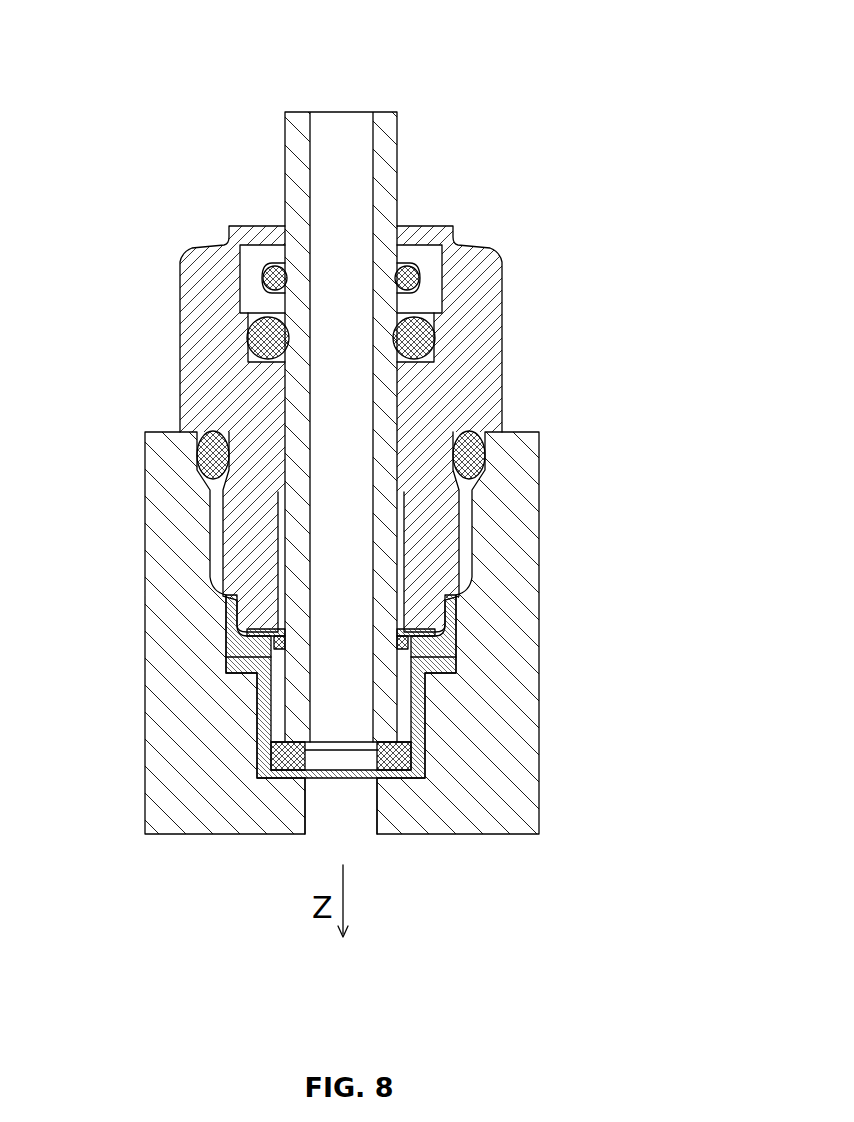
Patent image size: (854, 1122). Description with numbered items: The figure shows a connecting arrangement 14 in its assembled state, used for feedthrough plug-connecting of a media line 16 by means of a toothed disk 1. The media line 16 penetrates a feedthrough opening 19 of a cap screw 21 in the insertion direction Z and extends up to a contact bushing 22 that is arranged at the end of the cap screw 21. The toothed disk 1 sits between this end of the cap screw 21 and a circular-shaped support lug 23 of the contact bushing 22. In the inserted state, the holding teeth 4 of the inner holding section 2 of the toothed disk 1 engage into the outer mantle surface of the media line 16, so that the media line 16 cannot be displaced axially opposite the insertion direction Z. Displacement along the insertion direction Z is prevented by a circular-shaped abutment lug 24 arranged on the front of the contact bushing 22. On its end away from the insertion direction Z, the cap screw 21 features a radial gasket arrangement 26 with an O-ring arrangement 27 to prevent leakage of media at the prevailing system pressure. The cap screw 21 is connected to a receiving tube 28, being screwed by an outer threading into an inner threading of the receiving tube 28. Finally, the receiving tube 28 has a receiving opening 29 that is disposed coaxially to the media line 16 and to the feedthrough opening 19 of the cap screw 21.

The toothed disk 1 is at (437, 659).
The inner holding section 2 is at (279, 646).
The holding teeth 4 is at (423, 679).
The connecting arrangement 14 is at (433, 105).
The media line 16 is at (334, 145).
The feedthrough opening 19 is at (408, 562).
The cap screw 21 is at (484, 320).
The contact bushing 22 is at (433, 662).
The support lug 23 is at (232, 639).
The abutment lug 24 is at (283, 742).
The radial gasket arrangement 26 is at (456, 250).
The O-ring arrangement 27 is at (255, 335).
The receiving tube 28 is at (174, 517).
The receiving opening 29 is at (357, 818).